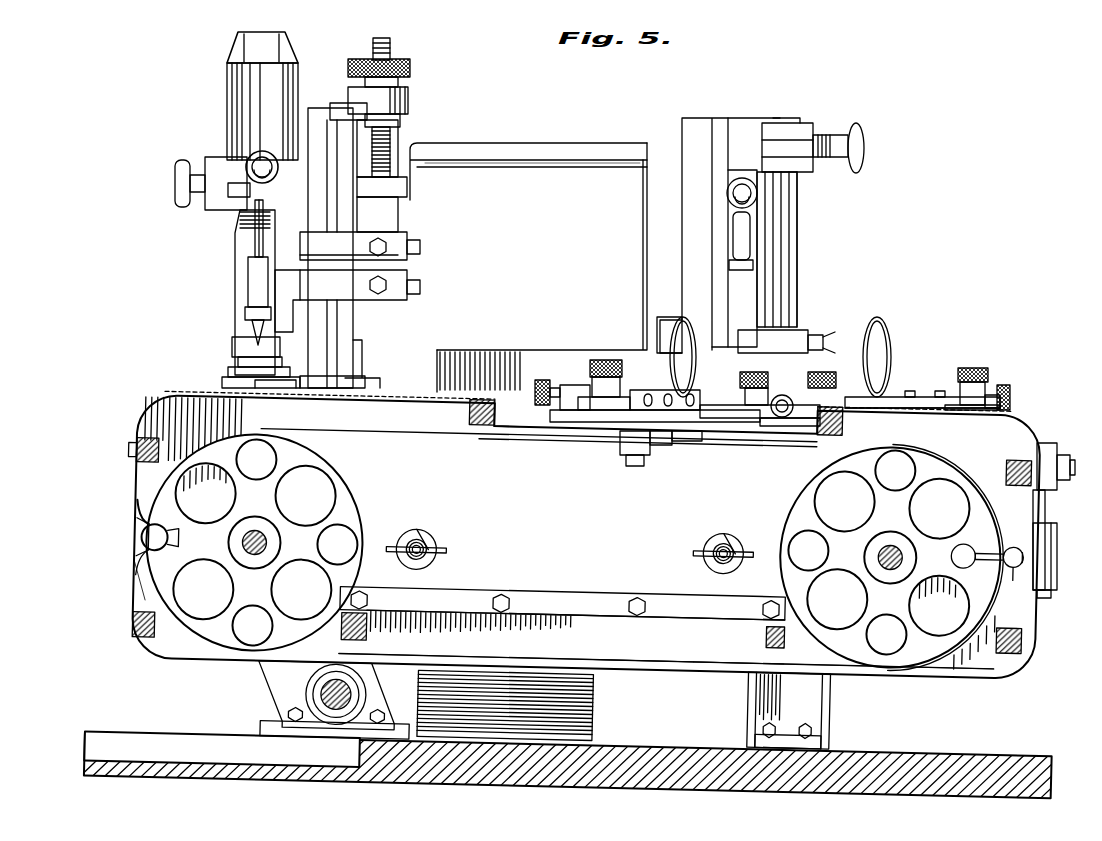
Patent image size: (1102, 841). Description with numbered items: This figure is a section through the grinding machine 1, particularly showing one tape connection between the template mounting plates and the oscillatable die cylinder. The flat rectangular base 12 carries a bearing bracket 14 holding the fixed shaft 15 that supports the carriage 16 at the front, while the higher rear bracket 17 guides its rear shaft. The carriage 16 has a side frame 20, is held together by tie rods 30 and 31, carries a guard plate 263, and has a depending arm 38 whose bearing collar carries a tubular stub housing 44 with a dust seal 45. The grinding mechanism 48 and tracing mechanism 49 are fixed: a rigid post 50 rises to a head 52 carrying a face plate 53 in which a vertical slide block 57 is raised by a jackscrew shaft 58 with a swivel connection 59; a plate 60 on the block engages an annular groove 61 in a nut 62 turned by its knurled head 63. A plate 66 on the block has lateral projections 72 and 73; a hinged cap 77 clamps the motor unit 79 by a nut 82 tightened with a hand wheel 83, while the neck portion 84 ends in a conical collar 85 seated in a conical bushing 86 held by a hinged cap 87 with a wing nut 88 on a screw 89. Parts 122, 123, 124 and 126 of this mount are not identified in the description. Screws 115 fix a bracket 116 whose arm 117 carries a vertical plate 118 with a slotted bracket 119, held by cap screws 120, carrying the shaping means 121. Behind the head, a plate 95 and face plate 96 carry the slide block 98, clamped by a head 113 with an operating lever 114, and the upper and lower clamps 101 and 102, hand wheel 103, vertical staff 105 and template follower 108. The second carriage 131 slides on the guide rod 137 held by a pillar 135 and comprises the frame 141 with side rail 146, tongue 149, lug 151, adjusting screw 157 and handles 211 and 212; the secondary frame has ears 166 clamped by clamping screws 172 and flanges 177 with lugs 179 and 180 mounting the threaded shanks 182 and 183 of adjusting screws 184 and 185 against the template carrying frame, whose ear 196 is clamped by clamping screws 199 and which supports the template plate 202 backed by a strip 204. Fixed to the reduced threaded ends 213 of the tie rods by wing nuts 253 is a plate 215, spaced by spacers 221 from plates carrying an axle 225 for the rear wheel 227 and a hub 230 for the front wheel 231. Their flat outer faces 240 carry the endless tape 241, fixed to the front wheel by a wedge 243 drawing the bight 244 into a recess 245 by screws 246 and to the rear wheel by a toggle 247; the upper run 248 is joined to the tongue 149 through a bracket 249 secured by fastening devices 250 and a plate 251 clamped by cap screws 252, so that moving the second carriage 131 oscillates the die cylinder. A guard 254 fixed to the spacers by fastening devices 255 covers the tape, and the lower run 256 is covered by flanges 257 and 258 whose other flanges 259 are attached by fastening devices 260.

The grinding machine 1 is at (1042, 440).
The base 12 is at (1060, 752).
The bearing bracket 14 is at (280, 722).
The fixed shaft 15 is at (375, 690).
The carriage 16 is at (500, 422).
The bearing bracket 17 is at (837, 702).
The side frame 20 is at (1057, 550).
The tie rod 30 is at (428, 540).
The tie rod 31 is at (715, 548).
The arm 38 is at (272, 680).
The tubular stub housing 44 is at (345, 652).
The dust seal 45 is at (384, 626).
The grinding mechanism 48 is at (233, 240).
The tracing mechanism 49 is at (798, 254).
The post 50 is at (440, 366).
The head 52 is at (548, 160).
The face plate 53 is at (398, 220).
The slide block 57 is at (338, 120).
The jackscrew shaft 58 is at (392, 150).
The swivel connection 59 is at (400, 195).
The plate 60 is at (340, 103).
The annular groove 61 is at (408, 105).
The nut 62 is at (410, 67).
The knurled head 63 is at (373, 56).
The plate 66 is at (290, 120).
The lateral projection 72 is at (283, 135).
The lateral projection 73 is at (312, 395).
The cap 77 is at (220, 157).
The motor unit 79 is at (280, 48).
The nut 82 is at (196, 176).
The hand wheel 83 is at (176, 182).
The neck portion 84 is at (244, 260).
The conical collar 85 is at (232, 343).
The conical bushing 86 is at (238, 360).
The hinged cap 87 is at (272, 395).
The wing nut 88 is at (228, 371).
The screw 89 is at (222, 383).
The plate 95 is at (645, 143).
The face plate 96 is at (697, 118).
The slide block 98 is at (730, 118).
The clamp 101 is at (805, 123).
The clamp 102 is at (790, 332).
The hand wheel 103 is at (862, 140).
The vertical staff 105 is at (797, 200).
The template follower 108 is at (822, 338).
The head 113 is at (750, 245).
The operating lever 114 is at (752, 215).
The screw 115 is at (388, 247).
The bracket 116 is at (408, 275).
The arm 117 is at (322, 246).
The vertical plate 118 is at (300, 287).
The slotted bracket 119 is at (302, 254).
The cap screw 120 is at (258, 192).
The shaping means 121 is at (245, 312).
The cylinder 122 is at (250, 291).
The rod top 123 is at (236, 218).
The round knob 124 is at (248, 168).
The rod 126 is at (256, 277).
The second carriage 131 is at (640, 418).
The pillar 135 is at (1057, 450).
The guide rod 137 is at (1072, 468).
The frame 141 is at (770, 428).
The side rail 146 is at (728, 420).
The tongue 149 is at (638, 455).
The lug 151 is at (838, 424).
The adjusting screw 157 is at (785, 418).
The ear 166 is at (700, 440).
The clamping screw 172 is at (750, 372).
The flange 177 is at (590, 412).
The lug 179 is at (612, 360).
The lug 180 is at (972, 382).
The threaded shank 182 is at (575, 402).
The threaded shank 183 is at (993, 395).
The adjusting screw 184 is at (565, 385).
The adjusting screw 185 is at (1010, 392).
The ear 196 is at (970, 410).
The clamping screw 199 is at (598, 360).
The template plate 202 is at (898, 397).
The strip 204 is at (930, 412).
The handle 211 is at (890, 350).
The handle 212 is at (685, 318).
The reduced threaded end 213 is at (414, 530).
The plate 215 is at (655, 660).
The spacer 221 is at (136, 455).
The axle 225 is at (900, 545).
The wheel 227 is at (958, 476).
The hub 230 is at (260, 518).
The wheel 231 is at (345, 497).
The flat outer face 240 is at (362, 508).
The endless tape 241 is at (528, 443).
The wedge 243 is at (152, 548).
The bight 244 is at (150, 560).
The recess 245 is at (140, 518).
The screw 246 is at (142, 540).
The toggle 247 is at (975, 553).
The upper run 248 is at (240, 432).
The bracket 249 is at (745, 395).
The fastening device 250 is at (650, 392).
The plate 251 is at (670, 445).
The cap screw 252 is at (645, 468).
The wing nut 253 is at (438, 553).
The guard 254 is at (160, 403).
The fastening device 255 is at (132, 446).
The lower run 256 is at (708, 666).
The flange 257 is at (585, 618).
The flange 258 is at (568, 590).
The flange 259 is at (616, 597).
The fastening device 260 is at (508, 590).
The guard plate 263 is at (378, 375).